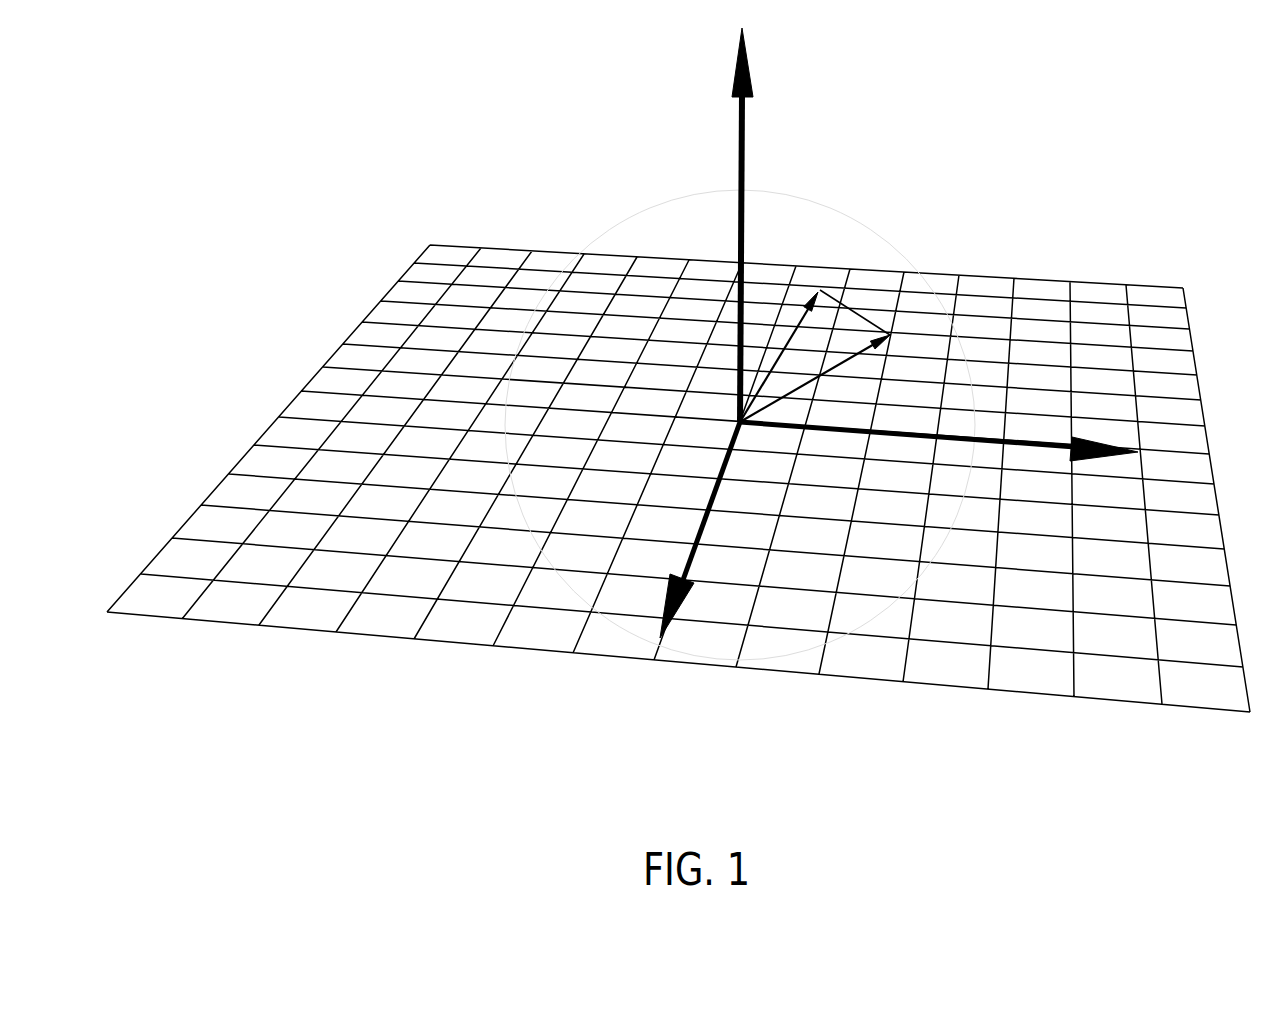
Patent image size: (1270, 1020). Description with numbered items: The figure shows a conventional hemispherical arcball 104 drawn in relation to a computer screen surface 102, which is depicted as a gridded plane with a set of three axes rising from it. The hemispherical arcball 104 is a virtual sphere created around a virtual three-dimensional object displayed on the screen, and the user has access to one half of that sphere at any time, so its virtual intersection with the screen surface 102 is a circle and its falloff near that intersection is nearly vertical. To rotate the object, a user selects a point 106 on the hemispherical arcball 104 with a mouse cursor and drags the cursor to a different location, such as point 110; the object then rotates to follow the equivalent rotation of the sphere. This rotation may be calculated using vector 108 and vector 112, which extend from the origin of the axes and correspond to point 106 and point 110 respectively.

The computer screen surface 102 is at (678, 491).
The hemispherical arcball 104 is at (740, 420).
The point 106 is at (908, 327).
The vector 108 is at (808, 382).
The point 110 is at (845, 294).
The vector 112 is at (775, 357).